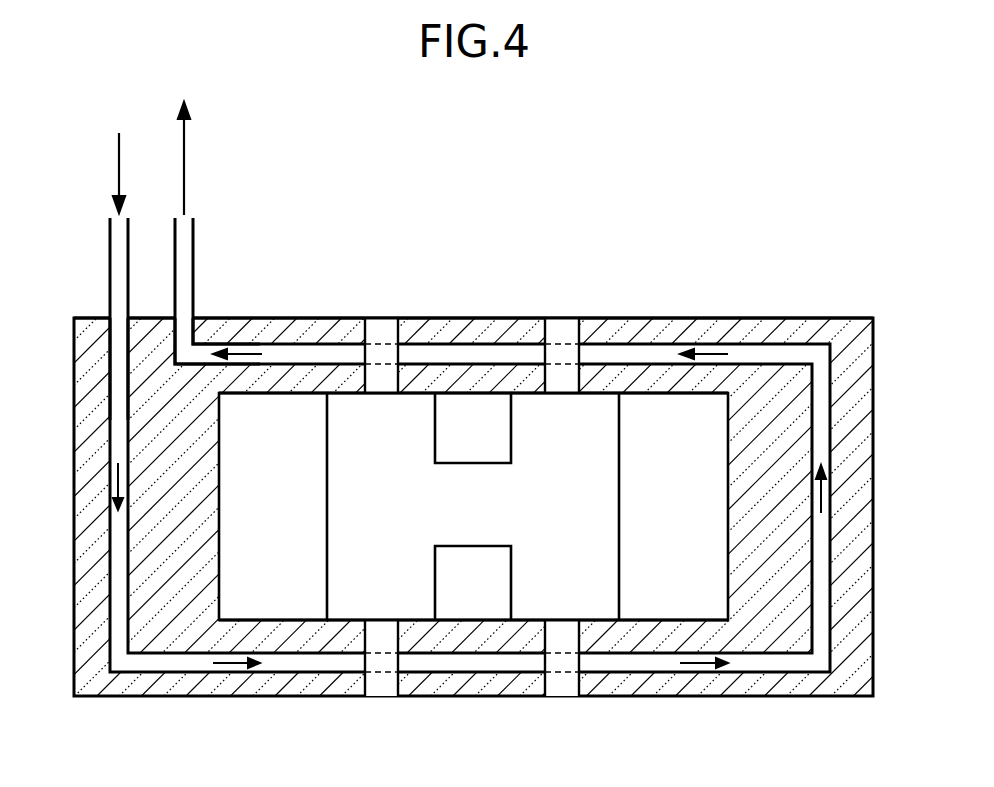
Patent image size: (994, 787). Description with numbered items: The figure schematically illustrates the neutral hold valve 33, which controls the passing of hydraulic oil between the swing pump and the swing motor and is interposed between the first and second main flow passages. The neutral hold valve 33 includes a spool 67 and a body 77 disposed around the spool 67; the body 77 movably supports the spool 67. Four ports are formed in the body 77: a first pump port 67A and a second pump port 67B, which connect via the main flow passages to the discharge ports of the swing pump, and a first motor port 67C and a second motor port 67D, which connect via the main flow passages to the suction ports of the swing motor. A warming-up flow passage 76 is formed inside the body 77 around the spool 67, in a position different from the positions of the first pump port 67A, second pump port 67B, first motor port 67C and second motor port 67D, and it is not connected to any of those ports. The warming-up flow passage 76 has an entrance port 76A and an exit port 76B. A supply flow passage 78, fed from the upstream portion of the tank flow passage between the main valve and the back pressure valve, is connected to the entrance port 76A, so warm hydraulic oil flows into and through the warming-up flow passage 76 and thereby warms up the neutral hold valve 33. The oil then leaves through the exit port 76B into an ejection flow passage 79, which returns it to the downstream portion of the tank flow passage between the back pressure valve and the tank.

The neutral hold valve 33 is at (814, 291).
The spool 67 is at (598, 578).
The first pump port 67A is at (383, 699).
The second pump port 67B is at (563, 699).
The first motor port 67C is at (385, 317).
The second motor port 67D is at (565, 317).
The warming-up flow passage 76 is at (117, 525).
The entrance port 76A is at (112, 316).
The exit port 76B is at (172, 318).
The body 77 is at (858, 385).
The supply flow passage 78 is at (110, 244).
The ejection flow passage 79 is at (195, 242).